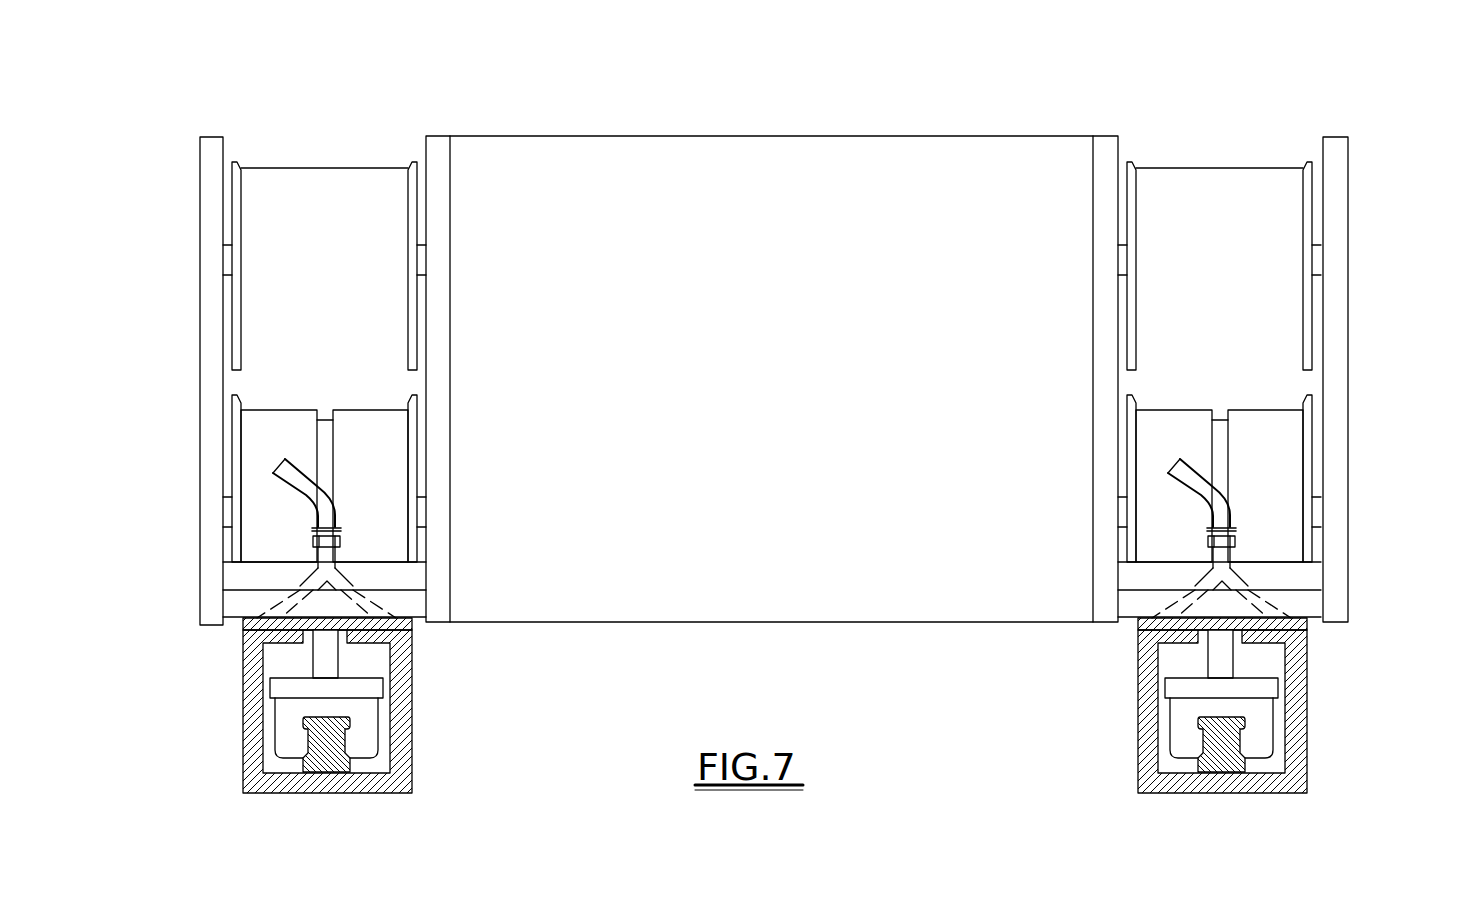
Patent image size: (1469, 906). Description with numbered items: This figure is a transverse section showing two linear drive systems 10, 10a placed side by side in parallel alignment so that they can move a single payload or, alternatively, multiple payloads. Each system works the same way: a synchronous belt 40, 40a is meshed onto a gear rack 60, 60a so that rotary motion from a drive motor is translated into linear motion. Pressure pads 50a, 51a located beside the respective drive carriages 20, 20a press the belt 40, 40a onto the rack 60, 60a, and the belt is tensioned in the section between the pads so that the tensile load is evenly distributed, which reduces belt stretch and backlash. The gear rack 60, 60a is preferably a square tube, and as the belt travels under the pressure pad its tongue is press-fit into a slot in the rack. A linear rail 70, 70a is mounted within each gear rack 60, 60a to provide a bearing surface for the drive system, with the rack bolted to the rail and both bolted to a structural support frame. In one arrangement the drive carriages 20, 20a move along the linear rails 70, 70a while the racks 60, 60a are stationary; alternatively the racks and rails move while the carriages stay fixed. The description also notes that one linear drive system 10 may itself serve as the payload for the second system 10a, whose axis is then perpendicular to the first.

The linear drive system 10 is at (320, 143).
The linear drive system 10a is at (1218, 143).
The drive carriage 20 is at (218, 343).
The drive carriage 20a is at (1328, 333).
The synchronous belt 40 is at (412, 623).
The synchronous belt 40a is at (1307, 623).
The pressure pad 50a is at (245, 580).
The pressure pad 51a is at (1287, 577).
The gear rack 60 is at (412, 718).
The gear rack 60a is at (1307, 716).
The linear rail 70 is at (327, 765).
The linear rail 70a is at (1222, 765).